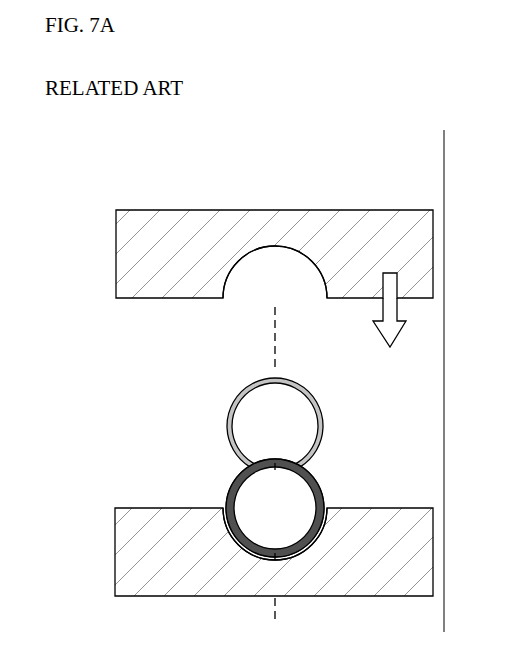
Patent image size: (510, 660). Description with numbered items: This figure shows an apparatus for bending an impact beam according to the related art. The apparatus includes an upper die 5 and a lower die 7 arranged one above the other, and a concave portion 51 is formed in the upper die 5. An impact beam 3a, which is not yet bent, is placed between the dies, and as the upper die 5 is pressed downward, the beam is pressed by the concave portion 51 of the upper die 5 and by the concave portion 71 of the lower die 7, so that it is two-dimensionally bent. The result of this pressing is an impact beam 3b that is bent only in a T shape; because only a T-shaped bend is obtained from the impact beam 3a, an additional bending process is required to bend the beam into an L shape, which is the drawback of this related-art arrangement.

The upper die 5 is at (143, 250).
The concave portion 51 is at (277, 247).
The lower die 7 is at (118, 552).
The semicircular groove of lower die 71 is at (243, 551).
The impact beam 3a is at (325, 426).
The impact beam 3b is at (323, 487).